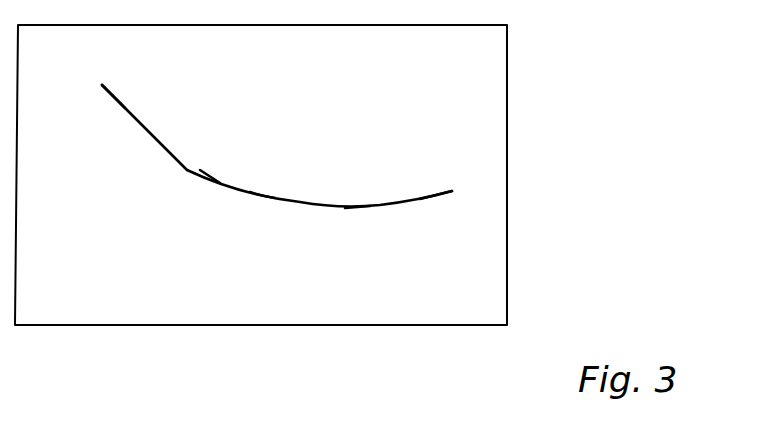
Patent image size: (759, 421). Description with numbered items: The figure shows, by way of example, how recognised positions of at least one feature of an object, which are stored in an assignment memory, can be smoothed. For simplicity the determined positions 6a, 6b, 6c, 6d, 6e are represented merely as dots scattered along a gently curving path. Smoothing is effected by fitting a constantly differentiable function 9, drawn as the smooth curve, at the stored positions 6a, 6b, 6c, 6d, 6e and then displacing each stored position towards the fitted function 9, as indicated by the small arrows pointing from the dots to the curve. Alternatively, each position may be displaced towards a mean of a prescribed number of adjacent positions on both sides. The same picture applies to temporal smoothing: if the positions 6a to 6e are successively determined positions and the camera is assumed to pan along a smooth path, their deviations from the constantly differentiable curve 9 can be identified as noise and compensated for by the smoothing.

The constantly differentiable function 9 is at (186, 166).
The position 6a is at (106, 106).
The position 6b is at (213, 165).
The position 6c is at (263, 206).
The position 6d is at (357, 193).
The position 6e is at (433, 214).